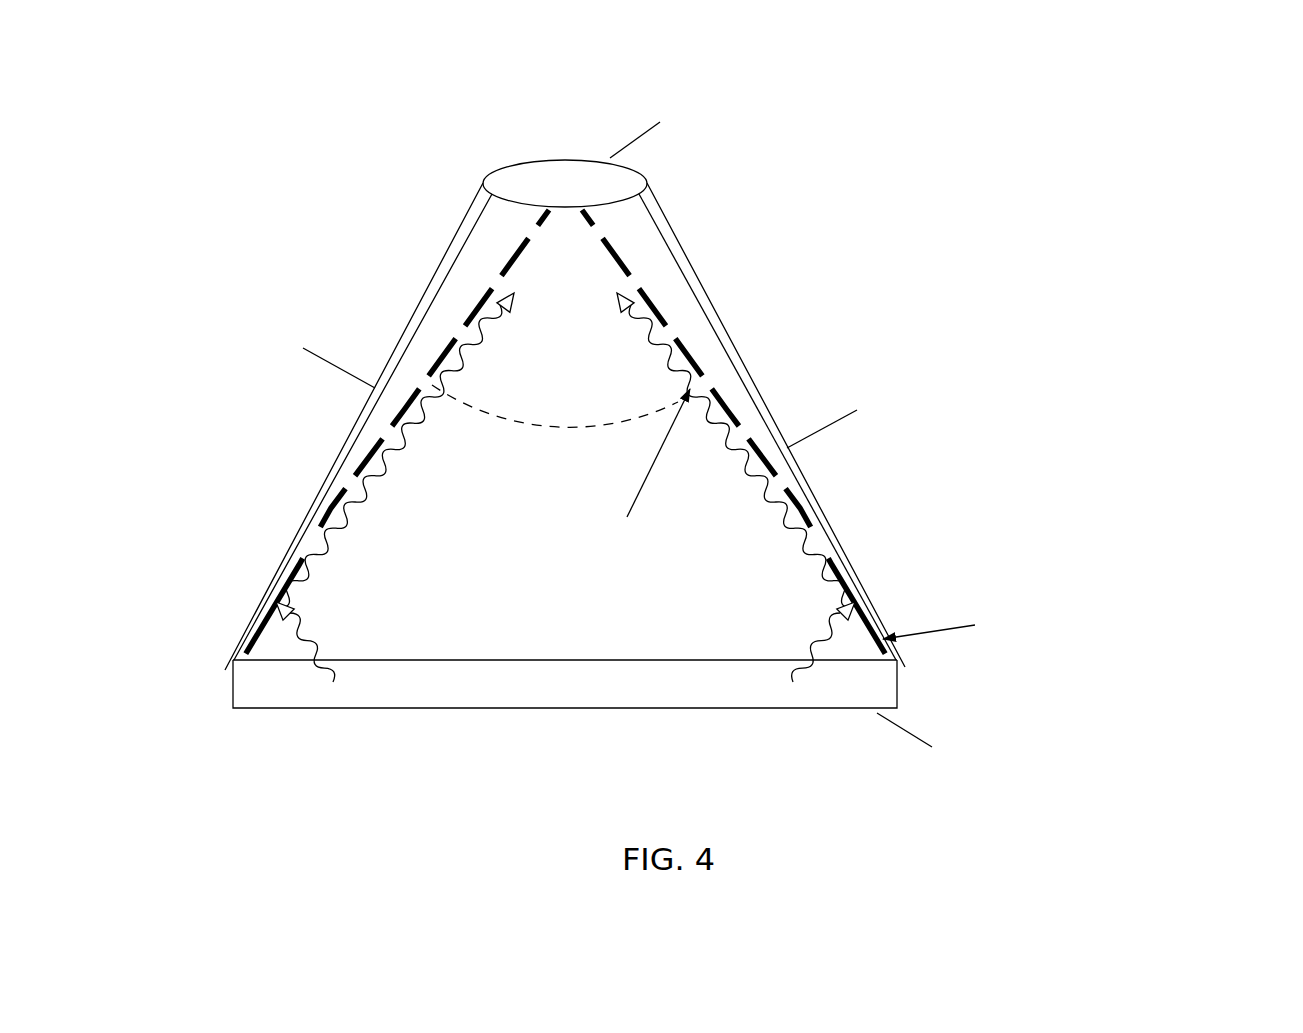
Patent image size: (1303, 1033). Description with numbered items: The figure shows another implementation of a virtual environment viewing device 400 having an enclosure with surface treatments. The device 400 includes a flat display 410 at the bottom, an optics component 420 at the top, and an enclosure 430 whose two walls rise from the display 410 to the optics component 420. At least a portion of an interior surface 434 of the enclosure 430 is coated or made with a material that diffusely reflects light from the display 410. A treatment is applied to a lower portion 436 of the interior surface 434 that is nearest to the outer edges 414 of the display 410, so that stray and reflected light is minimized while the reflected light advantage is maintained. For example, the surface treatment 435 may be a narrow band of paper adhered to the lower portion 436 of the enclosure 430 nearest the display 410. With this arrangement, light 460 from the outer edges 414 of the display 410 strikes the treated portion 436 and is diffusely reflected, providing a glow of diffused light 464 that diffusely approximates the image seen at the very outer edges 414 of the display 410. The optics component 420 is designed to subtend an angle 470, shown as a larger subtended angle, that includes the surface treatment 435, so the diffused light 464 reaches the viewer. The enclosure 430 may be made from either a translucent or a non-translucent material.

The virtual environment viewing device 400 is at (1069, 109).
The display 410 is at (754, 711).
The outer edges 414 is at (860, 661).
The optics component 420 is at (553, 165).
The enclosure 430 is at (734, 345).
The interior surface 434 is at (833, 564).
The surface treatment 435 is at (884, 645).
The lower portion 436 is at (877, 624).
The light 460 is at (819, 642).
The diffused light 464 is at (771, 531).
The angle 470 is at (462, 422).